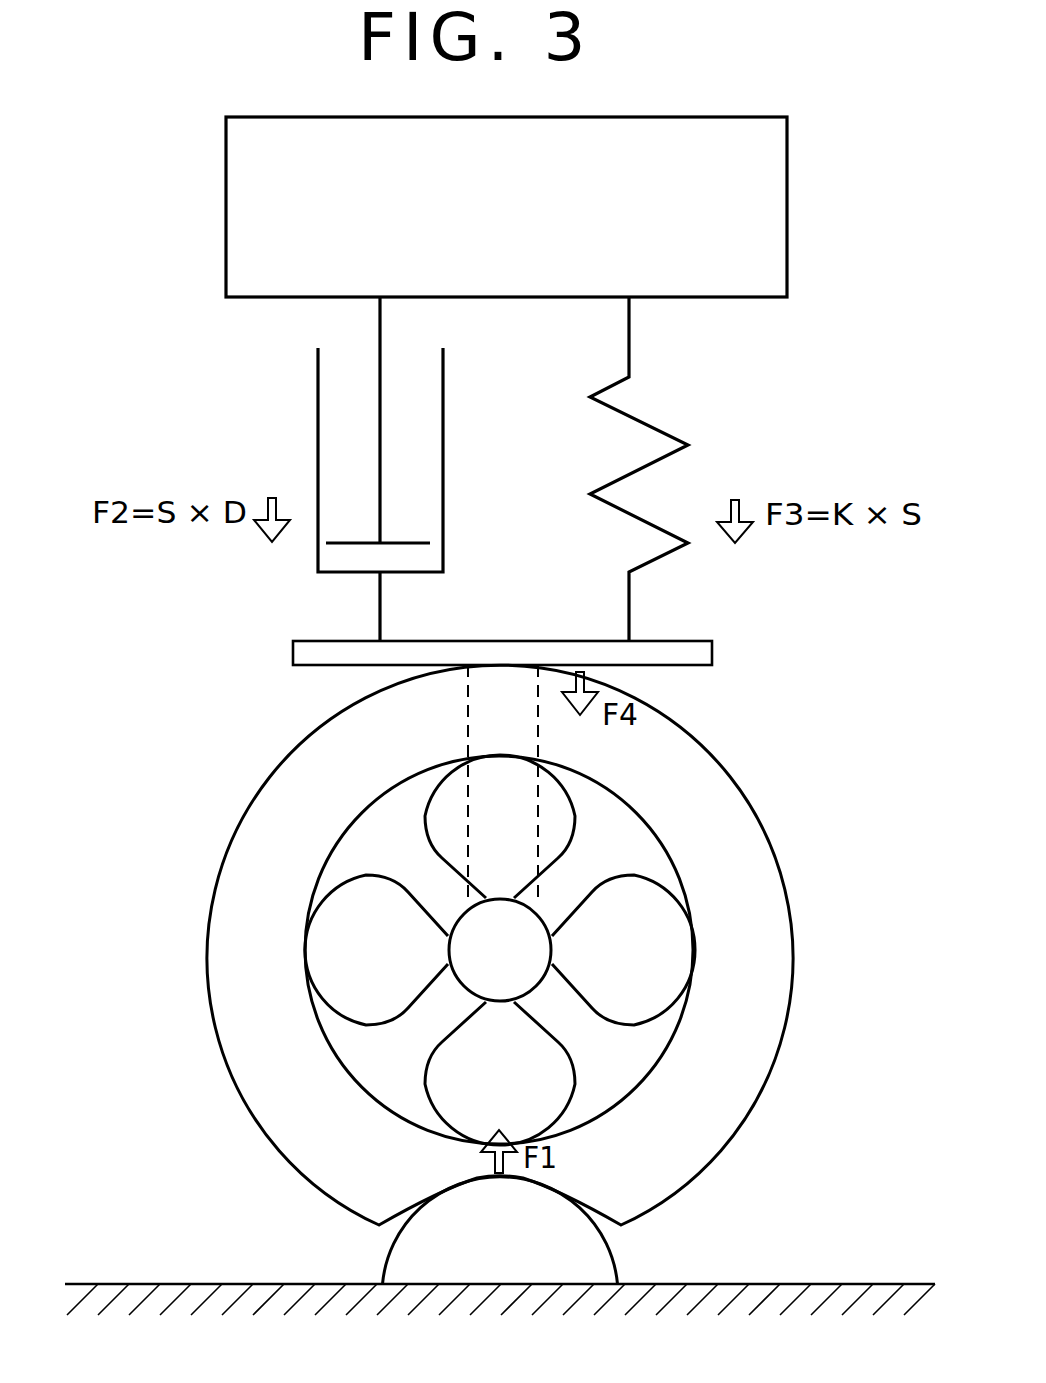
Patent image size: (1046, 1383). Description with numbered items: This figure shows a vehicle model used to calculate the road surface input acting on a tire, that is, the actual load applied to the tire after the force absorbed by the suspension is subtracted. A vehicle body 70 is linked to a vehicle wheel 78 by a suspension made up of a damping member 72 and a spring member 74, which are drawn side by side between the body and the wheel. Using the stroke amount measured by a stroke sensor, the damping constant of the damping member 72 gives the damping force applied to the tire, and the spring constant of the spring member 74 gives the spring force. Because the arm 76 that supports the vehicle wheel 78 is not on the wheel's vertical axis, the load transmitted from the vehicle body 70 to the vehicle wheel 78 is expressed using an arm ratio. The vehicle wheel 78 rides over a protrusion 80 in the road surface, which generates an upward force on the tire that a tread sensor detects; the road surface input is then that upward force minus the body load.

The vehicle body 70 is at (787, 208).
The damping member 72 is at (443, 460).
The spring member 74 is at (665, 434).
The arm 76 is at (540, 805).
The vehicle wheel 78 is at (782, 949).
The protrusion 80 is at (610, 1252).